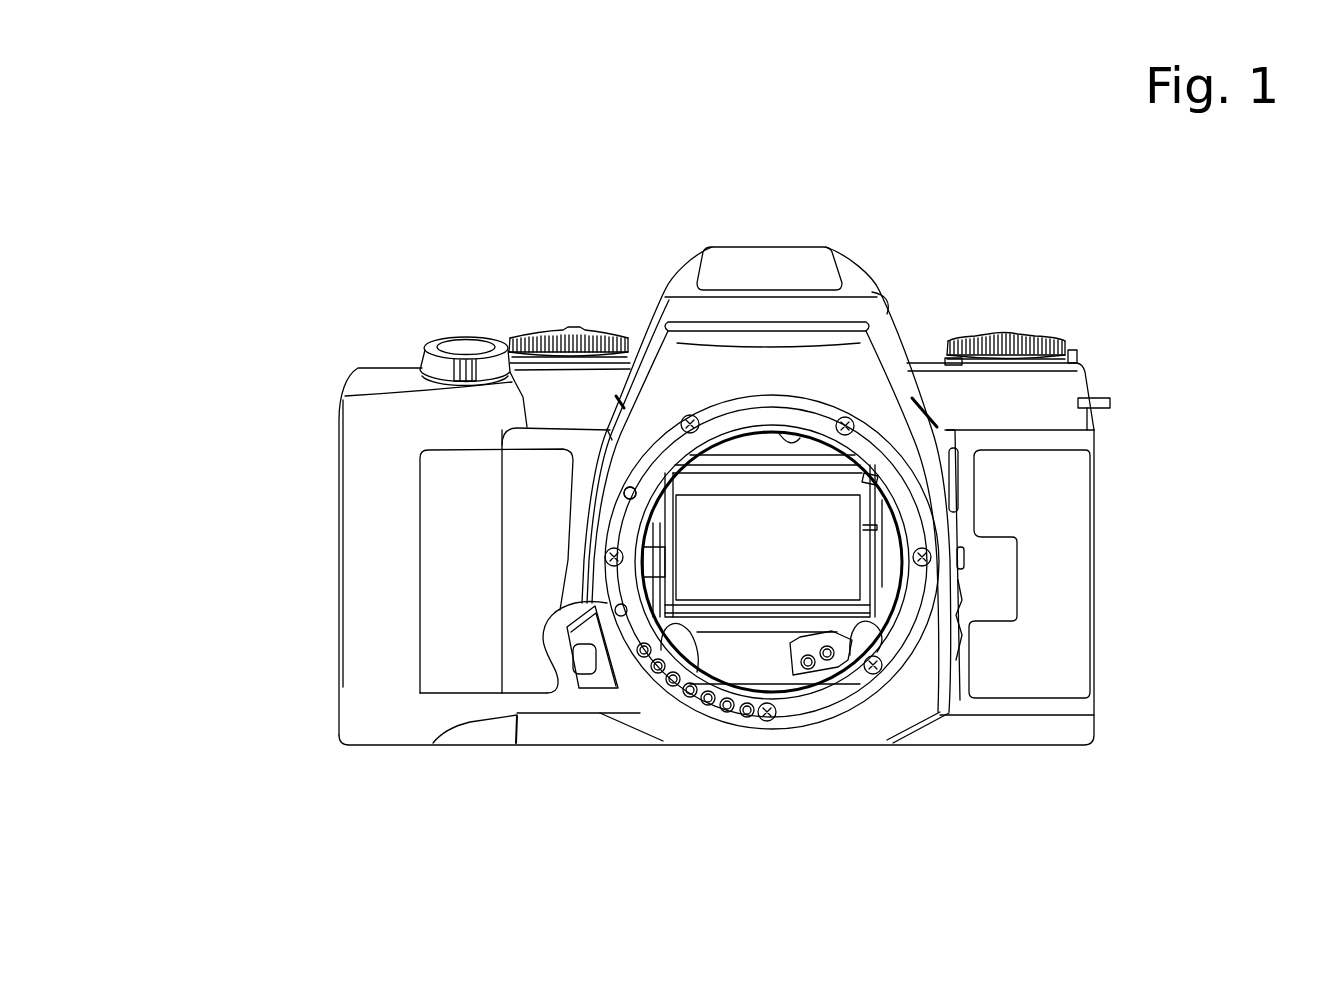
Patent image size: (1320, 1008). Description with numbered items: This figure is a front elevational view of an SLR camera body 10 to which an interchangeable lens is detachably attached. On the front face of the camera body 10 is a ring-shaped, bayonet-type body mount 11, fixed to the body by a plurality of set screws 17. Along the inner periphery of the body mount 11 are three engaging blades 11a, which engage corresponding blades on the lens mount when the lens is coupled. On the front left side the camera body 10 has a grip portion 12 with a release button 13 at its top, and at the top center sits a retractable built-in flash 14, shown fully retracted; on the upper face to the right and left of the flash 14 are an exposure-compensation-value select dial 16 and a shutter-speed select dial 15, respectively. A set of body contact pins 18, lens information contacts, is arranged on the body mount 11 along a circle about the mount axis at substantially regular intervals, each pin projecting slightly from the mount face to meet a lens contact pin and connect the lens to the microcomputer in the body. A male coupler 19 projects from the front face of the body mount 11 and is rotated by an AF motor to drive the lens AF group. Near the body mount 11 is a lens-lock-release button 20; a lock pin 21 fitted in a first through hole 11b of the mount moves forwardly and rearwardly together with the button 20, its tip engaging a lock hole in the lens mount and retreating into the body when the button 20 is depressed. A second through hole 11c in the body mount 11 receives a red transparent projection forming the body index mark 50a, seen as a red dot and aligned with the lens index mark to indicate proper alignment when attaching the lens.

The camera body 10 is at (970, 229).
The body mount 11 is at (807, 715).
The engaging blades 11a is at (790, 438).
The first through hole 11b is at (583, 600).
The second through hole 11c is at (603, 503).
The grip portion 12 is at (362, 644).
The release button 13 is at (463, 350).
The retractable built-in flash 14 is at (758, 262).
The shutter-speed select dial 15 is at (537, 336).
The exposure-compensation-value select dial 16 is at (1037, 338).
The set screws 17 is at (687, 417).
The body contact pins 18 is at (747, 718).
The male coupler 19 is at (873, 675).
The lens-lock-release button 20 is at (585, 668).
The lock pin 21 is at (621, 618).
The body index mark 50a is at (626, 493).